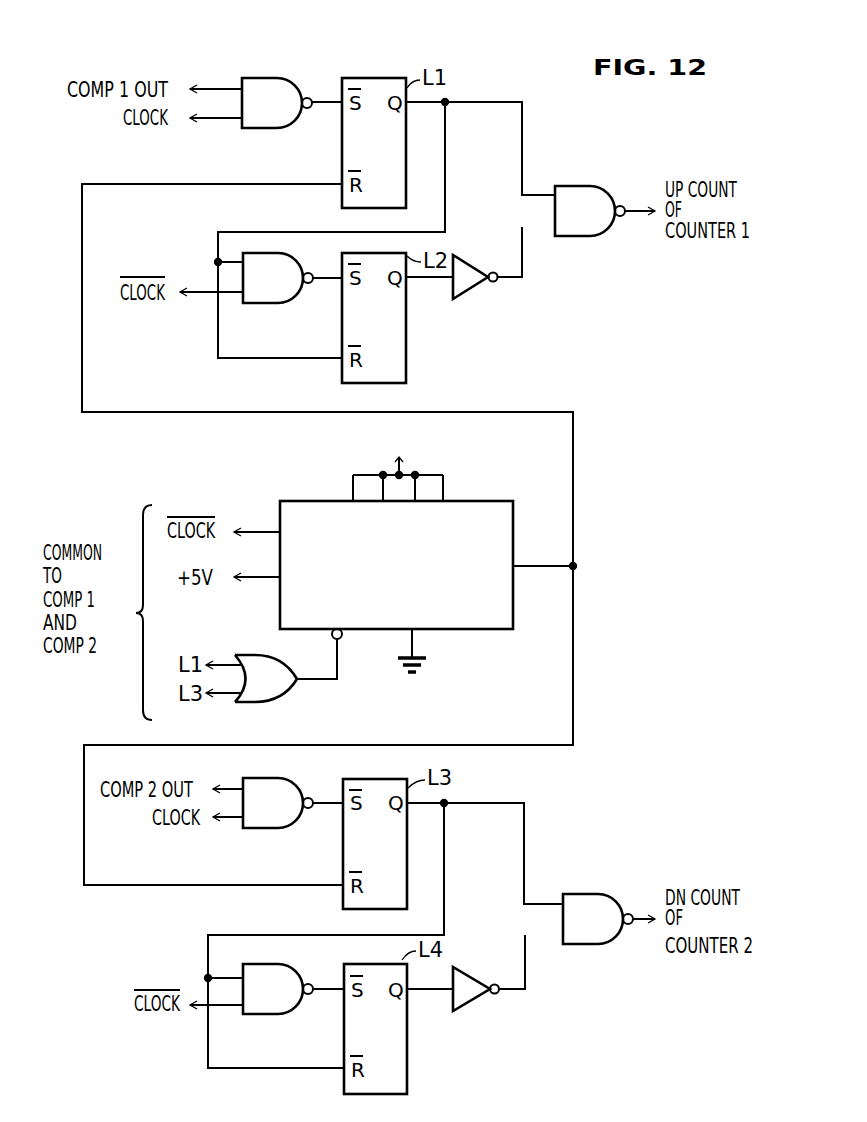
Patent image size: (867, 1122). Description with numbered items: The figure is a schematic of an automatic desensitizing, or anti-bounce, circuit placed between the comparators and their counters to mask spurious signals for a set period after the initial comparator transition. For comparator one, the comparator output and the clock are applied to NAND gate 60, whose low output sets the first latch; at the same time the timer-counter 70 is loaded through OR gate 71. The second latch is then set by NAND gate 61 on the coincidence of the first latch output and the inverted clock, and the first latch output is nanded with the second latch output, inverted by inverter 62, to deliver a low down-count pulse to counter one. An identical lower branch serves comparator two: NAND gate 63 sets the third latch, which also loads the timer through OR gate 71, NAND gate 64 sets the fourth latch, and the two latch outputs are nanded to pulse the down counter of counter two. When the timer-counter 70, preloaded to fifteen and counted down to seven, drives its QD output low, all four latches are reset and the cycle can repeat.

The NAND gate 60 is at (282, 88).
The NAND gate 61 is at (275, 302).
The inverter 62 is at (466, 286).
The NAND gate 63 is at (285, 788).
The NAND gate 64 is at (285, 982).
The timer-counter 70 is at (410, 605).
The OR gate 71 is at (275, 698).